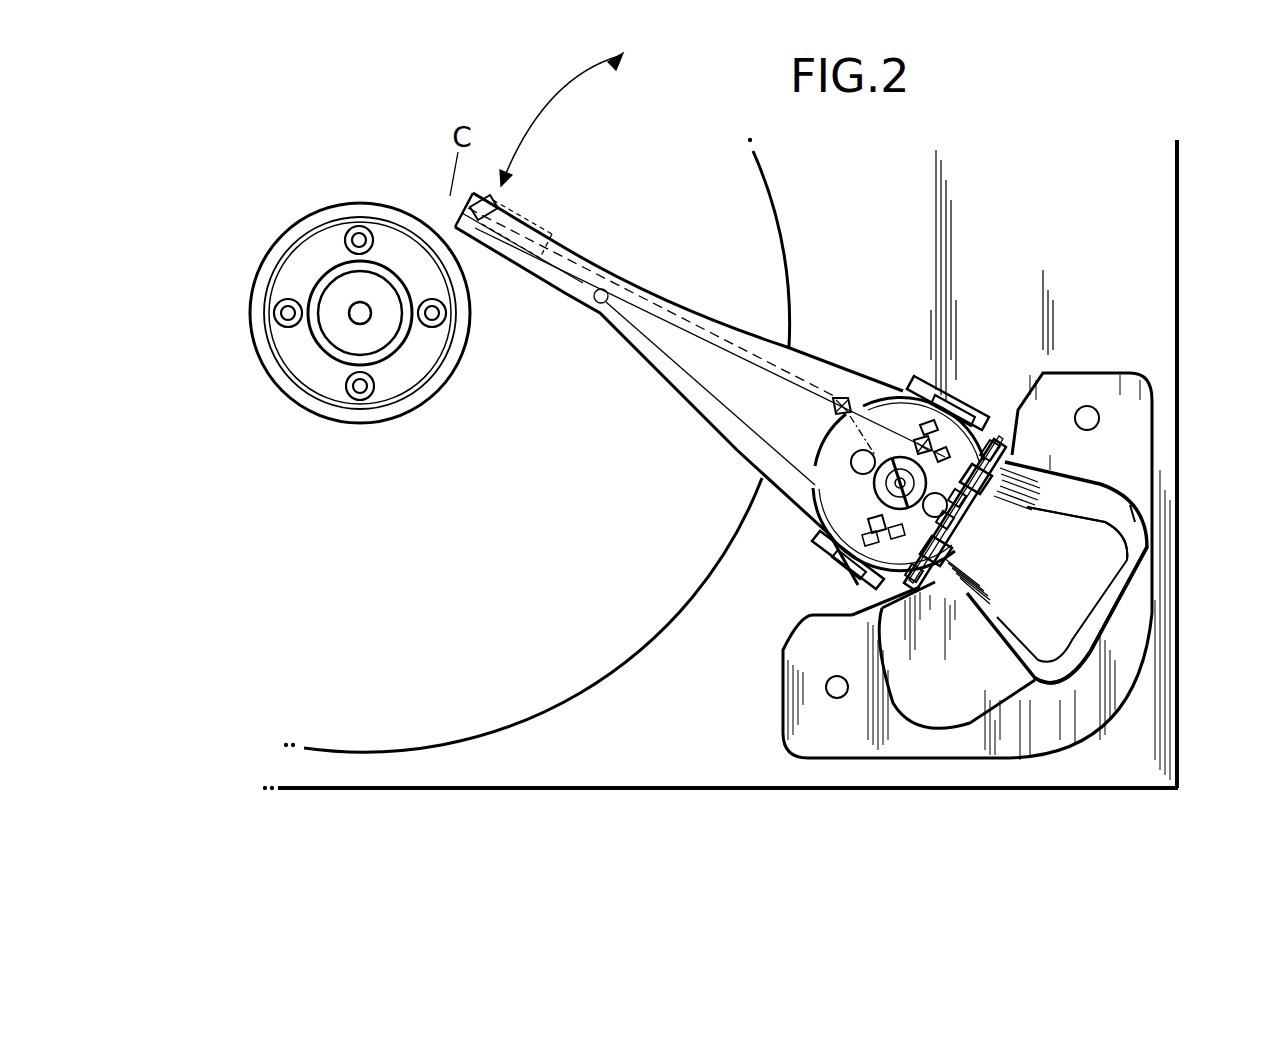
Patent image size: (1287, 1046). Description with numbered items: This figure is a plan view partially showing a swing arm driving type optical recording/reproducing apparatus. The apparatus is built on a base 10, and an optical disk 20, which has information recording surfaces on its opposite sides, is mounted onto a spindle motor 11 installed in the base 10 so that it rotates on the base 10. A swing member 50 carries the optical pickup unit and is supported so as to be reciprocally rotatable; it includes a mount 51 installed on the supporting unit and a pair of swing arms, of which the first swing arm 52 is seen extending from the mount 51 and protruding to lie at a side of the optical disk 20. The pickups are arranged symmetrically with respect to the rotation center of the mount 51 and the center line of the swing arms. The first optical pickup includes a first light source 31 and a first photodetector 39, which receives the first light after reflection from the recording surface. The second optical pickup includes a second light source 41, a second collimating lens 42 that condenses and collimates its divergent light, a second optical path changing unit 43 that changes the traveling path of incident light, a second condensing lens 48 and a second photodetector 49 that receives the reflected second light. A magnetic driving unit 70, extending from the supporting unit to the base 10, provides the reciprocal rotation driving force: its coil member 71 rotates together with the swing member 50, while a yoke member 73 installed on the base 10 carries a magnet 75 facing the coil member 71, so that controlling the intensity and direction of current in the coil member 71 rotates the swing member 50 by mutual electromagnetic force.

The base 10 is at (523, 785).
The spindle motor 11 is at (340, 335).
The optical disk 20 is at (760, 203).
The first light source 31 is at (940, 540).
The first photodetector 39 is at (840, 556).
The second light source 41 is at (996, 452).
The second collimating lens 42 is at (945, 448).
The second optical path changing unit 43 is at (914, 442).
The second condensing lens 48 is at (927, 425).
The second photodetector 49 is at (948, 390).
The swing member 50 is at (738, 456).
The mount 51 is at (842, 503).
The first swing arm 52 is at (644, 354).
The magnetic driving unit 70 is at (1023, 715).
The coil member 71 is at (1130, 554).
The yoke member 73 is at (1108, 498).
The magnet 75 is at (1128, 400).